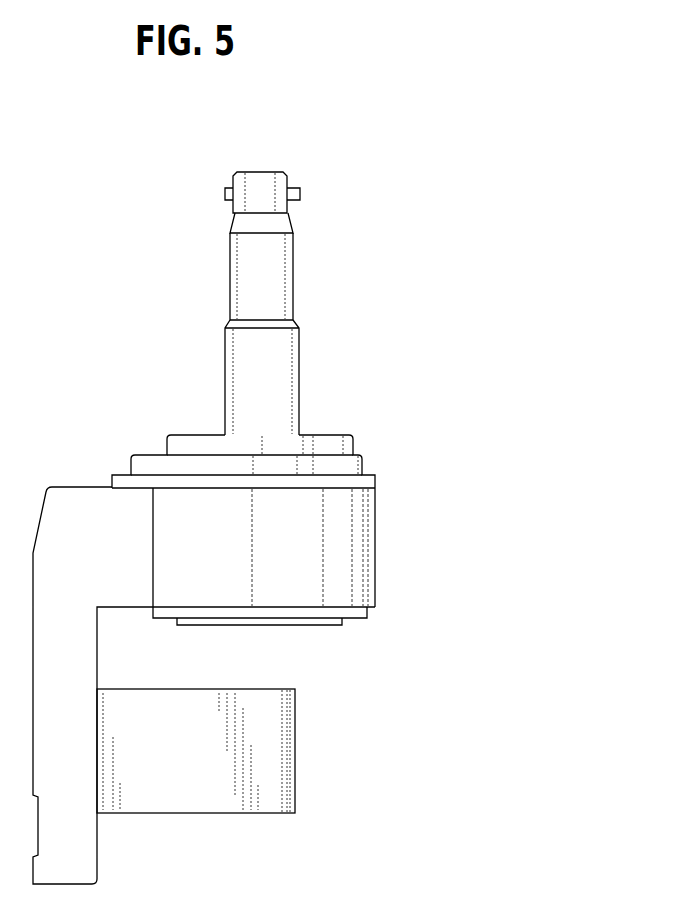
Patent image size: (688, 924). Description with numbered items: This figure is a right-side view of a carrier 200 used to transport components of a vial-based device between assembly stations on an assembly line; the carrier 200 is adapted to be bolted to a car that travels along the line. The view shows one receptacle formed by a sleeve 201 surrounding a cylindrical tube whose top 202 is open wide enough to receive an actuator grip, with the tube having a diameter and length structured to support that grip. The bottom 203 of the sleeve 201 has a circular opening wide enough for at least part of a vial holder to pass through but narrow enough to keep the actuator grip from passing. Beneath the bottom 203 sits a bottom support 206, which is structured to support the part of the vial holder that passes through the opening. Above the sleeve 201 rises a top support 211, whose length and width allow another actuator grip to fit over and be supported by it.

The carrier 200 is at (428, 181).
The sleeve 201 is at (376, 543).
The top 202 is at (330, 436).
The bottom 203 is at (313, 627).
The bottom support 206 is at (296, 751).
The top support 211 is at (237, 181).